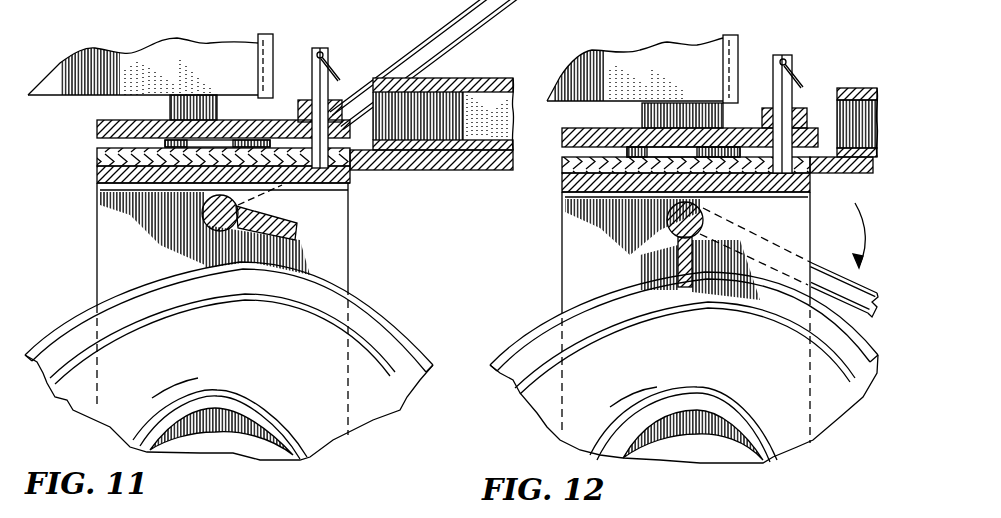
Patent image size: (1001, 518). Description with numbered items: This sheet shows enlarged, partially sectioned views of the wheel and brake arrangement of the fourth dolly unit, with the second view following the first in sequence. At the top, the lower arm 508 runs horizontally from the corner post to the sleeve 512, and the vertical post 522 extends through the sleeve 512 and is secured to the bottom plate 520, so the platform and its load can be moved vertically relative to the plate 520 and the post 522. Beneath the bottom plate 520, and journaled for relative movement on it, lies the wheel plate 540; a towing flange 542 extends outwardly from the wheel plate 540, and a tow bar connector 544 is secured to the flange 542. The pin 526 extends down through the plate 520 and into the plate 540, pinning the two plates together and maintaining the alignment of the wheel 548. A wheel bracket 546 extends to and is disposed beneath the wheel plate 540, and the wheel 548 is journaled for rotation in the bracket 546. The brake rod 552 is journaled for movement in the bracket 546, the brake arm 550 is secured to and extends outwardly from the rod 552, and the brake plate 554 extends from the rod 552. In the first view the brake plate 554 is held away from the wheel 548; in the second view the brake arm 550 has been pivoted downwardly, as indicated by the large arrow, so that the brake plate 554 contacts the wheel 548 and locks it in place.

In FIG. 11, the lower arm 508 is at (108, 47).
In FIG. 12, the lower arm 508 is at (613, 63).
In FIG. 11, the sleeve 512 is at (274, 38).
In FIG. 12, the sleeve 512 is at (739, 48).
In FIG. 11, the bottom plate 520 is at (97, 125).
In FIG. 12, the bottom plate 520 is at (562, 135).
In FIG. 11, the vertical post 522 is at (172, 96).
In FIG. 12, the vertical post 522 is at (642, 117).
In FIG. 11, the pin 526 is at (330, 54).
In FIG. 12, the pin 526 is at (786, 55).
In FIG. 11, the wheel plate 540 is at (97, 152).
In FIG. 12, the wheel plate 540 is at (757, 180).
In FIG. 11, the towing flange 542 is at (440, 162).
In FIG. 11, the tow bar connector 544 is at (477, 78).
In FIG. 12, the tow bar connector 544 is at (840, 88).
In FIG. 11, the wheel bracket 546 is at (97, 202).
In FIG. 12, the wheel bracket 546 is at (562, 240).
In FIG. 11, the wheel 548 is at (368, 306).
In FIG. 12, the wheel 548 is at (543, 318).
In FIG. 11, the brake arm 550 is at (417, 57).
In FIG. 12, the brake arm 550 is at (821, 266).
In FIG. 11, the brake rod 552 is at (201, 213).
In FIG. 12, the brake rod 552 is at (667, 213).
In FIG. 11, the brake plate 554 is at (290, 200).
In FIG. 12, the brake plate 554 is at (677, 258).